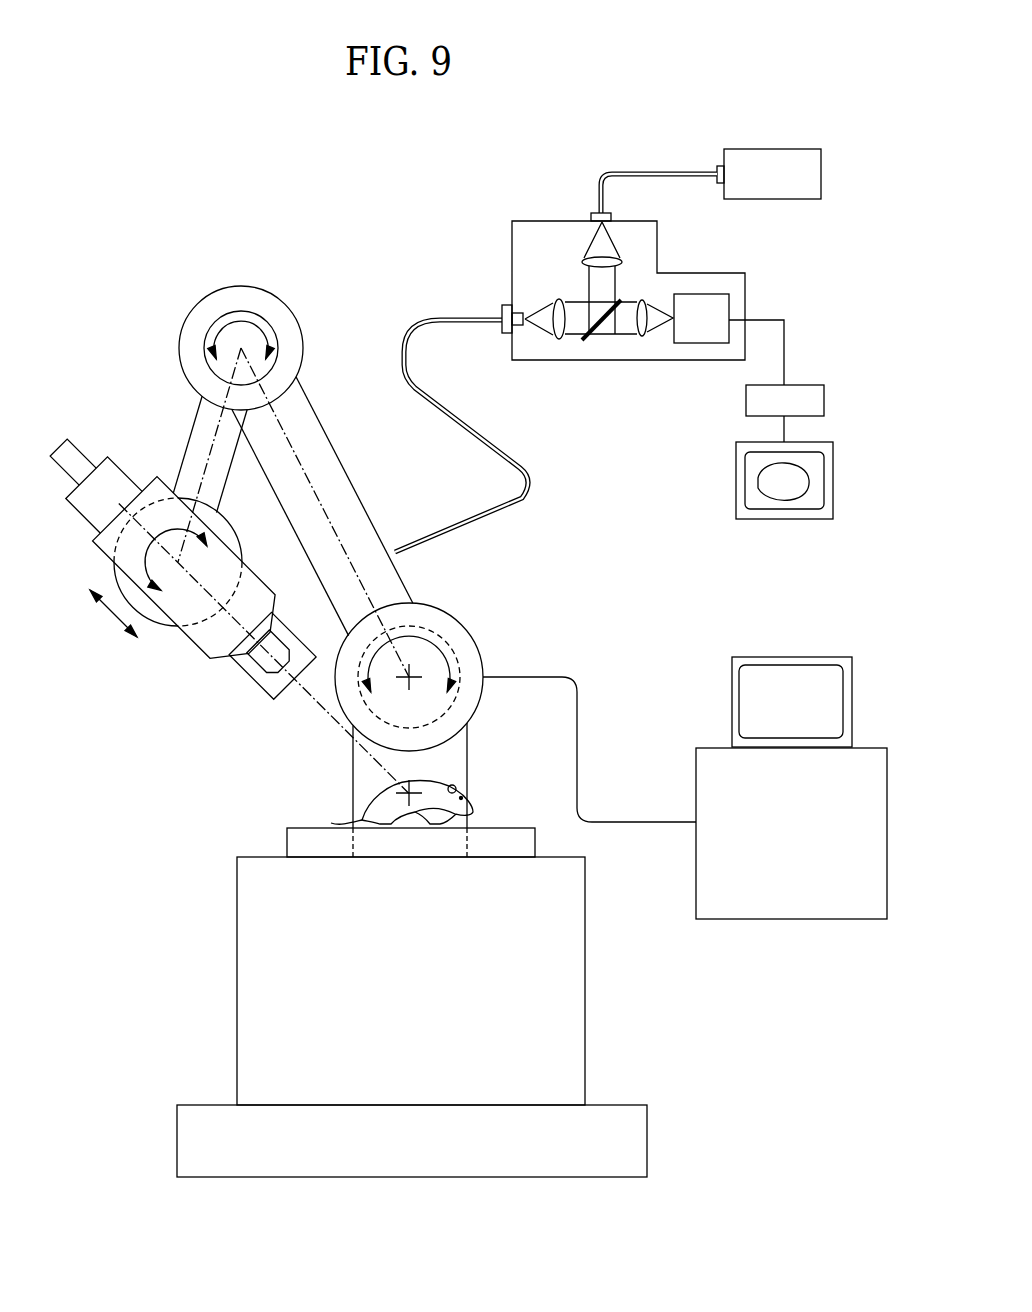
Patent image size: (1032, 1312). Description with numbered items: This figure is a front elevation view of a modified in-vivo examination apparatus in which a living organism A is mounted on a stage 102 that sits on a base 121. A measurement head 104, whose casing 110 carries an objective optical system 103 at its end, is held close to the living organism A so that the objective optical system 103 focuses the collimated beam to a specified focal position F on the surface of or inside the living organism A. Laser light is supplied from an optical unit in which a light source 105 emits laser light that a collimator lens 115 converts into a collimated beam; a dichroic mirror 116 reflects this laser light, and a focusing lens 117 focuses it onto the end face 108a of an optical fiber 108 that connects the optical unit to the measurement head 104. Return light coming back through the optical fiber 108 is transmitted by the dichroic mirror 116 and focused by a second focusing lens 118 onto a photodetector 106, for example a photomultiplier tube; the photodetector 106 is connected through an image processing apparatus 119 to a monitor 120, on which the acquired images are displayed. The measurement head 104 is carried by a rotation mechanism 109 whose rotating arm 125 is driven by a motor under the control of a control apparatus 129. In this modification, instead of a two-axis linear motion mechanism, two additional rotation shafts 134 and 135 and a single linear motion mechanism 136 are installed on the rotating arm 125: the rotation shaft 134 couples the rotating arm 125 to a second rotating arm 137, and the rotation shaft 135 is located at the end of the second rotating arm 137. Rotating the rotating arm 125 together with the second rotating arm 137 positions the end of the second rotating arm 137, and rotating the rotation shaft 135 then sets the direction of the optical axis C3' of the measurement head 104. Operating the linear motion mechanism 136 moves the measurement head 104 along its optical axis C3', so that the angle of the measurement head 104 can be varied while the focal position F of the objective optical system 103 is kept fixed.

The stage 102 is at (287, 838).
The objective optical system 103 is at (267, 697).
The measurement head 104 is at (188, 694).
The light source 105 is at (775, 150).
The photodetector 106 is at (712, 295).
The optical fiber 108 is at (405, 333).
The end face 108a is at (520, 327).
The rotation mechanism 109 is at (397, 508).
The casing 110 is at (192, 643).
The collimator lens 115 is at (622, 259).
The dichroic mirror 116 is at (585, 345).
The focusing lens 117 is at (558, 300).
The focusing lens 118 is at (643, 338).
The image processing apparatus 119 is at (804, 385).
The monitor 120 is at (790, 520).
The base 121 is at (555, 1000).
The rotating arm 125 is at (402, 583).
The control apparatus 129 is at (834, 637).
The rotation shaft 134 is at (252, 287).
The rotation shaft 135 is at (240, 545).
The linear motion mechanism 136 is at (242, 672).
The second rotating arm 137 is at (183, 447).
The living organism A is at (473, 813).
The focal position F is at (430, 785).
The optical axis C3' is at (264, 649).